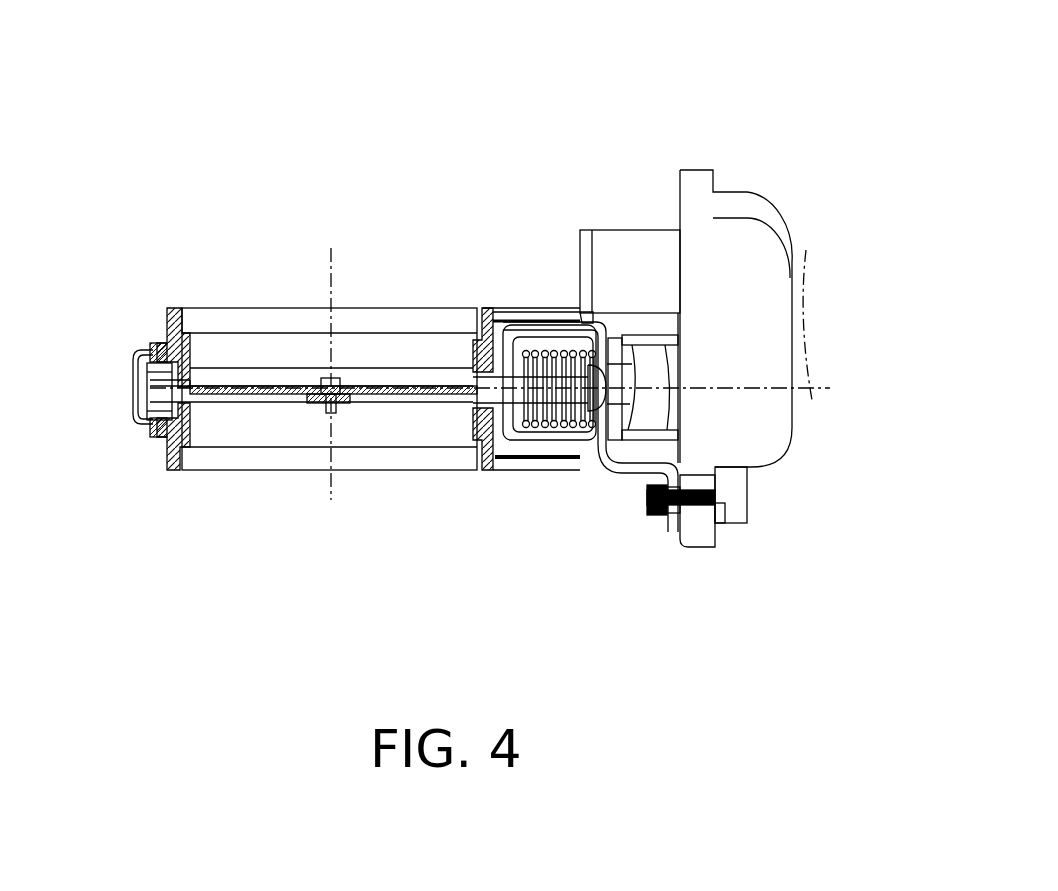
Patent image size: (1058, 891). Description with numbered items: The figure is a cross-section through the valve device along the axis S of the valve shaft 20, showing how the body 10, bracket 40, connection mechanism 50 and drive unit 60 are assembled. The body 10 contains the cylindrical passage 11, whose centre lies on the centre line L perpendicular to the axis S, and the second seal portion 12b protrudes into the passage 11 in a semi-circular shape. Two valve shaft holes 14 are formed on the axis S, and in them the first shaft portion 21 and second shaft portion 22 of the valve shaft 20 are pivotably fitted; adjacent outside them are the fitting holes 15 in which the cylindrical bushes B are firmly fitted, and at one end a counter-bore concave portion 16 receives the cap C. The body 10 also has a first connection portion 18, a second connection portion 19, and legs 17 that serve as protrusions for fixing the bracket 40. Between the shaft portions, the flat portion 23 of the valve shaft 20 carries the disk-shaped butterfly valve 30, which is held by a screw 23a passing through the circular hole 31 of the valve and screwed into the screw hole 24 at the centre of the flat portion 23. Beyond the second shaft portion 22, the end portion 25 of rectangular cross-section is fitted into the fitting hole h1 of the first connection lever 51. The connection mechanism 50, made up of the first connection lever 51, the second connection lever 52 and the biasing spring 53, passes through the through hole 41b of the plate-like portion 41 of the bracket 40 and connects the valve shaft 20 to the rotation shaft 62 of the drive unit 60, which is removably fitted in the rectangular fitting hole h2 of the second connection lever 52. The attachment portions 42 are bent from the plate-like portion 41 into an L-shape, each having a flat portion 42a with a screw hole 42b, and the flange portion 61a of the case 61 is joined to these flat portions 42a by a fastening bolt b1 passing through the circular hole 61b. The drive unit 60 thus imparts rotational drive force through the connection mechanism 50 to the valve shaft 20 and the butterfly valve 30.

The body 10 is at (166, 310).
The passage 11 is at (186, 333).
The second seal portion 12b is at (345, 398).
The valve shaft holes 14 is at (466, 378).
The fitting holes 15 is at (165, 352).
The concave portion 16 is at (140, 353).
The legs 17 is at (528, 307).
The first connection portion 18 is at (183, 471).
The second connection portion 19 is at (176, 307).
The valve shaft 20 is at (243, 405).
The first shaft portion 21 is at (163, 425).
The second shaft portion 22 is at (481, 402).
The flat portion 23 is at (293, 404).
The screw 23a is at (364, 386).
The screw hole 24 is at (331, 415).
The end portion 25 is at (494, 468).
The butterfly valve 30 is at (268, 383).
The circular hole 31 is at (327, 378).
The bracket 40 is at (589, 229).
The plate-like portion 41 is at (592, 257).
The through hole 41b is at (595, 313).
The attachment portions 42 is at (638, 229).
The flat portion 42a is at (672, 532).
The screw hole 42b is at (662, 515).
The connection mechanism 50 is at (561, 438).
The first connection lever 51 is at (526, 432).
The second connection lever 52 is at (562, 318).
The biasing spring 53 is at (549, 432).
The drive unit 60 is at (735, 192).
The case 61 is at (776, 202).
The flange portion 61a is at (697, 538).
The circular hole 61b is at (723, 524).
The rotation shaft 62 is at (614, 410).
The bushes B is at (160, 428).
The cap C is at (140, 406).
The centre line L is at (337, 359).
The axis S is at (817, 325).
The fitting hole h1 is at (627, 400).
The fitting hole h2 is at (633, 370).
The fastening bolt b1 is at (747, 513).